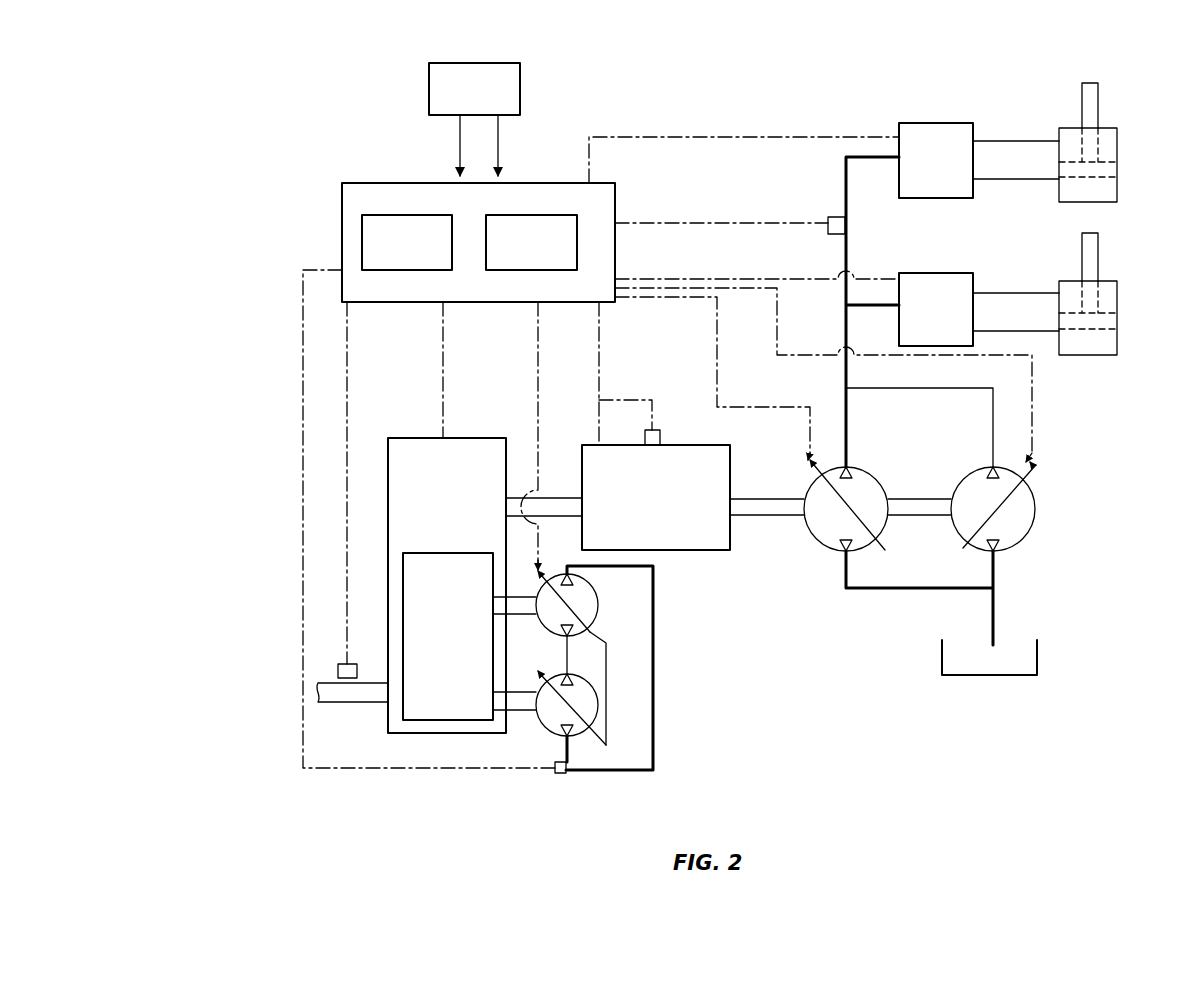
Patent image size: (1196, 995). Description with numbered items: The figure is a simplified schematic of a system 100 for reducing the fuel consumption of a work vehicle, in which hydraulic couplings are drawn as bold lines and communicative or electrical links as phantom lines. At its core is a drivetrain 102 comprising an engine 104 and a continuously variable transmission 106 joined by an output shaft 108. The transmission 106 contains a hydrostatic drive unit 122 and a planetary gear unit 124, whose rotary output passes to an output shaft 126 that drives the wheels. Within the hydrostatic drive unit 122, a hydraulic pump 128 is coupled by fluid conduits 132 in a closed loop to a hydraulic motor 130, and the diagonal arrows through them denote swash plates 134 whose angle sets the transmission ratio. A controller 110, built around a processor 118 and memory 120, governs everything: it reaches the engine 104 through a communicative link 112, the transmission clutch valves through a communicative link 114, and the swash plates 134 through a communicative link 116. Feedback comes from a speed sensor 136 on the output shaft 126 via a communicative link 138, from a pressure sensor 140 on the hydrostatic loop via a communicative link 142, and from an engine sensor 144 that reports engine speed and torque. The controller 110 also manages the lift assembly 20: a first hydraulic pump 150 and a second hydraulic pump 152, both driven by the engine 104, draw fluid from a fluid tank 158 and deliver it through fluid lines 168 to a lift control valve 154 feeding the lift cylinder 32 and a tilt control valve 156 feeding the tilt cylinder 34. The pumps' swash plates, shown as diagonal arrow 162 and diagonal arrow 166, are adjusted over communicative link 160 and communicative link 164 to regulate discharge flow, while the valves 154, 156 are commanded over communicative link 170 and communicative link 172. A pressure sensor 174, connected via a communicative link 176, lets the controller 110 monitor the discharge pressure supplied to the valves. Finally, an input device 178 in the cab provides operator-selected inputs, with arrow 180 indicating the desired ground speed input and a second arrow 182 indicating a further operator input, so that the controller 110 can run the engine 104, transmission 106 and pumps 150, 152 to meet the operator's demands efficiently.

The lift assembly 20 is at (1096, 496).
The lift cylinder 32 is at (1117, 143).
The tilt cylinder 34 is at (1117, 300).
The system 100 is at (228, 158).
The drivetrain 102 is at (246, 490).
The engine 104 is at (766, 497).
The continuously variable transmission 106 is at (447, 585).
The output shaft 108 is at (530, 505).
The controller 110 is at (376, 176).
The communicative link 112 is at (600, 382).
The communicative link 114 is at (443, 383).
The communicative link 116 is at (538, 385).
The processor 118 is at (407, 242).
The memory device 120 is at (531, 242).
The hydrostatic drive unit 122 is at (670, 657).
The planetary gear unit 124 is at (469, 636).
The output shaft 126 is at (345, 700).
The hydraulic pump 128 is at (597, 600).
The hydraulic motor 130 is at (580, 733).
The fluid conduits 132 is at (654, 718).
The swash plates 134 is at (546, 578).
The speed sensor 136 is at (352, 668).
The communicative link 138 is at (350, 427).
The pressure sensor 140 is at (560, 775).
The communicative link 142 is at (302, 596).
The engine sensor 144 is at (660, 436).
The first hydraulic pump 150 is at (825, 522).
The second hydraulic pump 152 is at (1015, 530).
The lift control valve 154 is at (979, 160).
The tilt control valve 156 is at (979, 309).
The fluid tank 158 is at (1037, 660).
The communicative link 160 is at (737, 407).
The first swash plate 162 is at (828, 485).
The communicative link 164 is at (776, 320).
The second swash plate 166 is at (1025, 473).
The fluid lines 168 is at (880, 388).
The communicative link 170 is at (735, 137).
The communicative link 172 is at (717, 279).
The pressure sensor 174 is at (838, 217).
The communicative link 176 is at (684, 223).
The input device 178 is at (474, 89).
The arrow 180 is at (458, 150).
The operator input signal 182 is at (499, 140).